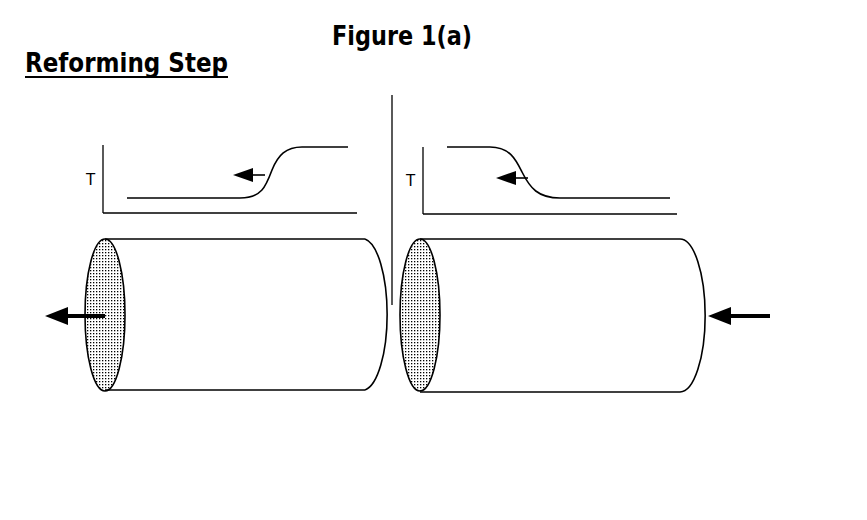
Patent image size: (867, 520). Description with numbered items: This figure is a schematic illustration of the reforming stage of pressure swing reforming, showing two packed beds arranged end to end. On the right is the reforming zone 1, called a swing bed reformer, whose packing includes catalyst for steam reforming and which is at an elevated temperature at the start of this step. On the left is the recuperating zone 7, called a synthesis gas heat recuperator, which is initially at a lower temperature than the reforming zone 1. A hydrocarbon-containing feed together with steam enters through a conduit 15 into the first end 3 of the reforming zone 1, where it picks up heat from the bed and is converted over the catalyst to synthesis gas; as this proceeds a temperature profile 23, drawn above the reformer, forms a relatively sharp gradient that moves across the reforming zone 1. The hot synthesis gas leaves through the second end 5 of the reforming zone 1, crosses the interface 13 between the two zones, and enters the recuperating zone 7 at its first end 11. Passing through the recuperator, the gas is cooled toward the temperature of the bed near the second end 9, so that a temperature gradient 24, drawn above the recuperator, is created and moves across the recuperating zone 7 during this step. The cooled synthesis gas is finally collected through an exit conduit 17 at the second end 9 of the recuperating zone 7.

The reforming zone 1 is at (577, 345).
The first end of the reforming zone 3 is at (698, 370).
The second end of the reforming zone 5 is at (415, 393).
The recuperating zone 7 is at (228, 356).
The second end of the recuperating zone 9 is at (99, 392).
The first end of the recuperating zone 11 is at (385, 375).
The interface 13 is at (393, 186).
The conduit 15 is at (745, 313).
The exit conduit 17 is at (75, 318).
The temperature profile 23 is at (523, 172).
The temperature gradient 24 is at (272, 162).